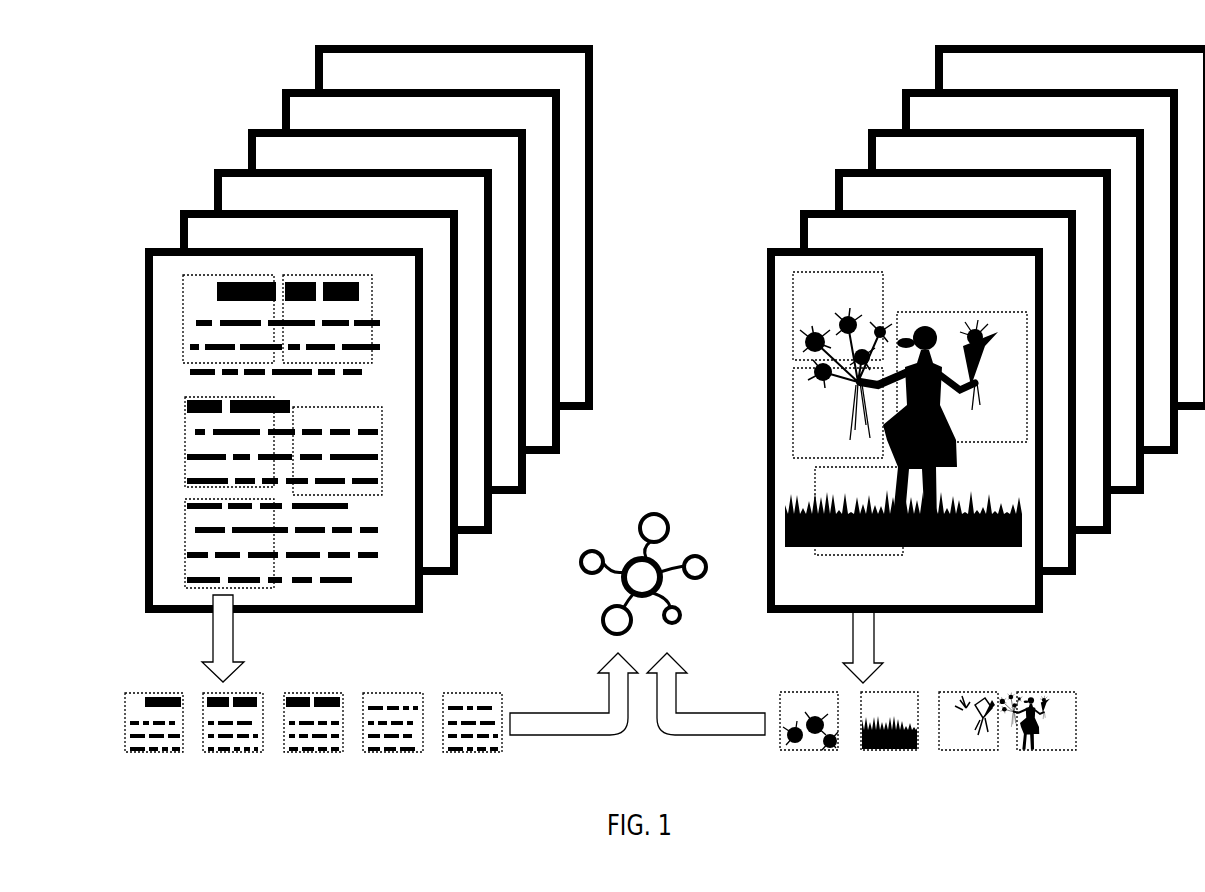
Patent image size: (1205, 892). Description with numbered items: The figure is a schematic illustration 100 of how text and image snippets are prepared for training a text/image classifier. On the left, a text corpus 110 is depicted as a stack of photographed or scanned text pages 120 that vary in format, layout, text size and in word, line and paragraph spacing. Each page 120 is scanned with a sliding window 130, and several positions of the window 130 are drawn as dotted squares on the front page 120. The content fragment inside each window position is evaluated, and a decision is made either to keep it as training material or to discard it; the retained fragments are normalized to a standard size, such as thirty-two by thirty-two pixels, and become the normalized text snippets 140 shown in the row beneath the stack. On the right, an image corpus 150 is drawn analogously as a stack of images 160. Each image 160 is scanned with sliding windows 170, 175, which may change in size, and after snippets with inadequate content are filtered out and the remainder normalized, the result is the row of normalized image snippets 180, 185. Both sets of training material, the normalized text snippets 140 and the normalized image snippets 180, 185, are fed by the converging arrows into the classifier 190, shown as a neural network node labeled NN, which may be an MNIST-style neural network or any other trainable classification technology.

The schematic illustration 100 is at (702, 78).
The text corpus 110 is at (253, 120).
The text page 120 is at (170, 243).
The sliding window 130 is at (260, 568).
The normalized text snippets 140 is at (463, 688).
The image corpus 150 is at (878, 120).
The image 160 is at (795, 243).
The sliding window 170 is at (880, 550).
The sliding window 175 is at (997, 440).
The normalized image snippet 180 is at (902, 692).
The normalized image snippet 185 is at (1037, 688).
The classifier 190 is at (645, 507).